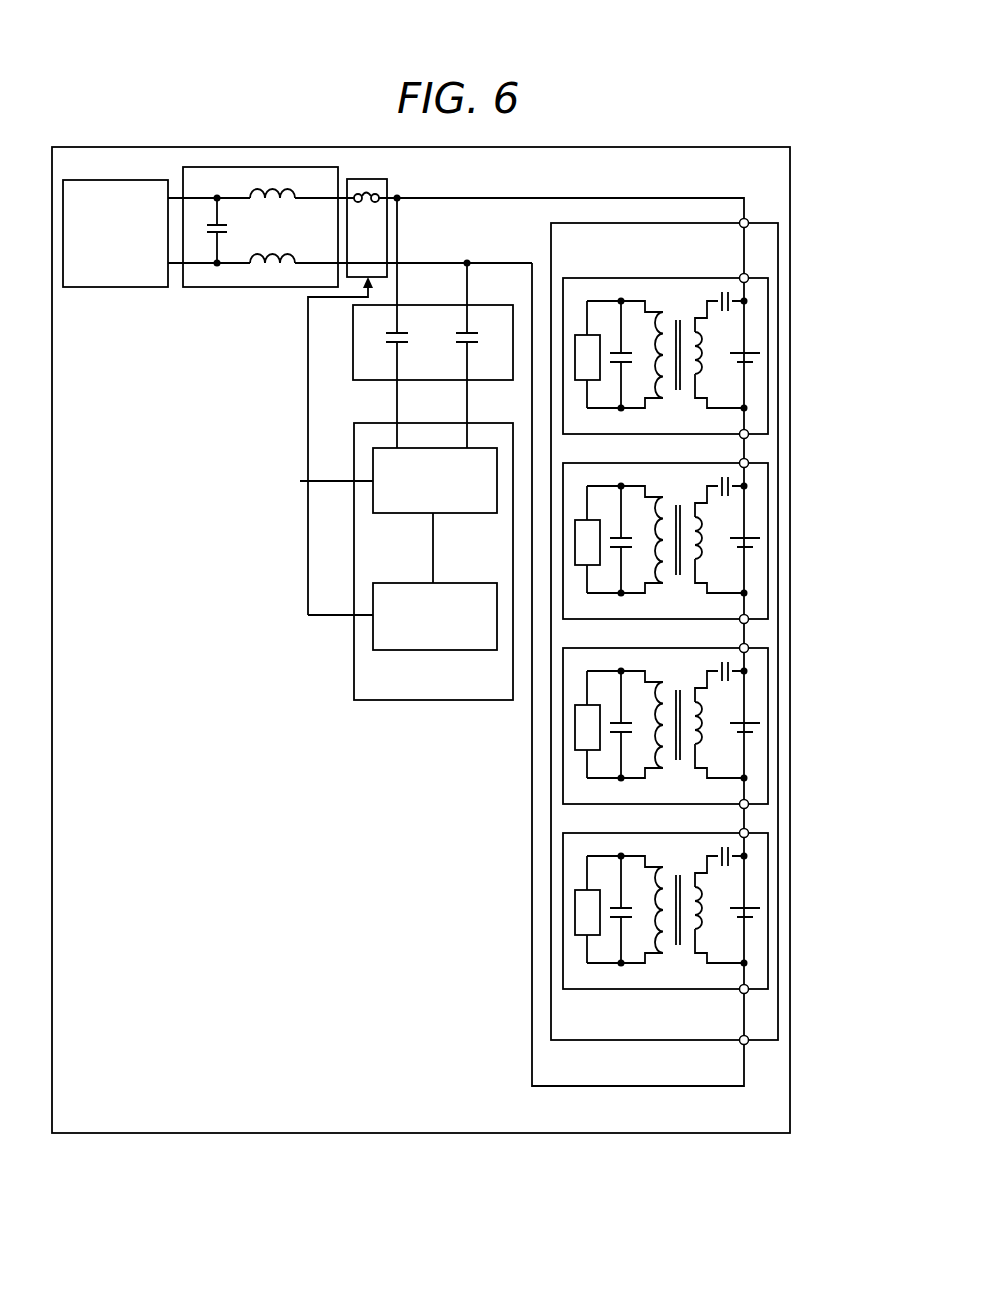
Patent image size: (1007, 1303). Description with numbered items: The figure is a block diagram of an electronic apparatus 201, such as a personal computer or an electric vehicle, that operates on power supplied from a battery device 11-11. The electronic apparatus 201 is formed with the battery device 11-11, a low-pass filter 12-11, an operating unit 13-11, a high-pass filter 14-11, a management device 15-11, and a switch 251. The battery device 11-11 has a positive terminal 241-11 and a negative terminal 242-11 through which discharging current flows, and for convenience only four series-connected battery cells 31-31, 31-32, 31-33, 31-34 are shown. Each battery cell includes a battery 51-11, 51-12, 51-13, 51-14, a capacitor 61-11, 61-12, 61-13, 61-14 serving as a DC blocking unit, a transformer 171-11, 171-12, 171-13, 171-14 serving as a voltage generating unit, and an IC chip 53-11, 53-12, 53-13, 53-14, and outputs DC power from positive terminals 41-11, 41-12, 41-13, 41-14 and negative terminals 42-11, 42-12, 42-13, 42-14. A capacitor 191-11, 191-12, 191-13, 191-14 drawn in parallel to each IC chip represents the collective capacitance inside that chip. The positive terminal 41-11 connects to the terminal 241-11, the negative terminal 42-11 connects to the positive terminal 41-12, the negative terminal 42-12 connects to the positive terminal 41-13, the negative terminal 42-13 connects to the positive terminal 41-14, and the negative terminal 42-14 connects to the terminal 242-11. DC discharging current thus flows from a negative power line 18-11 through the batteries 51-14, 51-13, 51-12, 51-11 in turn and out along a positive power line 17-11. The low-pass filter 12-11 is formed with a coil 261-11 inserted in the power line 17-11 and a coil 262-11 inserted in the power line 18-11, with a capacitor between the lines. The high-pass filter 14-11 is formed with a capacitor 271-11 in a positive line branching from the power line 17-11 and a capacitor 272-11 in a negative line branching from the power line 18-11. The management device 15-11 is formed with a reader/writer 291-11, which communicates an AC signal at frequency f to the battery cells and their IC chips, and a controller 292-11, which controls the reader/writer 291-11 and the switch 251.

The electronic apparatus 201 is at (290, 1135).
The operating unit 13-11 is at (118, 288).
The low-pass filter 12-11 is at (255, 167).
The coil 261-11 is at (258, 204).
The coil 262-11 is at (262, 270).
The switch 251 is at (367, 179).
The positive power line 17-11 is at (562, 198).
The high-pass filter 14-11 is at (434, 305).
The capacitor 271-11 is at (400, 344).
The capacitor 272-11 is at (470, 344).
The management device 15-11 is at (433, 701).
The reader/writer 291-11 is at (308, 481).
The controller 292-11 is at (373, 633).
The negative power line 18-11 is at (588, 1087).
The battery device 11-11 is at (623, 1041).
The positive terminal 241-11 is at (749, 222).
The negative terminal 242-11 is at (749, 1042).
The battery cell 31-31 is at (768, 313).
The battery cell 31-32 is at (708, 528).
The battery cell 31-33 is at (708, 713).
The battery cell 31-34 is at (708, 898).
The positive terminal 41-11 is at (748, 276).
The positive terminal 41-12 is at (793, 453).
The positive terminal 41-13 is at (793, 638).
The positive terminal 41-14 is at (793, 823).
The negative terminal 42-11 is at (748, 432).
The negative terminal 42-12 is at (793, 609).
The negative terminal 42-13 is at (793, 794).
The negative terminal 42-14 is at (793, 979).
The battery 51-11 is at (762, 353).
The battery 51-12 is at (791, 534).
The battery 51-13 is at (791, 719).
The battery 51-14 is at (791, 904).
The capacitor 61-11 is at (720, 290).
The capacitor 61-12 is at (700, 466).
The capacitor 61-13 is at (700, 651).
The capacitor 61-14 is at (700, 836).
The IC chip 53-11 is at (580, 382).
The IC chip 53-12 is at (591, 551).
The IC chip 53-13 is at (591, 736).
The IC chip 53-14 is at (591, 921).
The transformer 171-11 is at (678, 392).
The transformer 171-12 is at (698, 551).
The transformer 171-13 is at (698, 736).
The transformer 171-14 is at (698, 921).
The capacitor 191-11 is at (624, 364).
The capacitor 191-12 is at (634, 539).
The capacitor 191-13 is at (634, 724).
The capacitor 191-14 is at (634, 909).